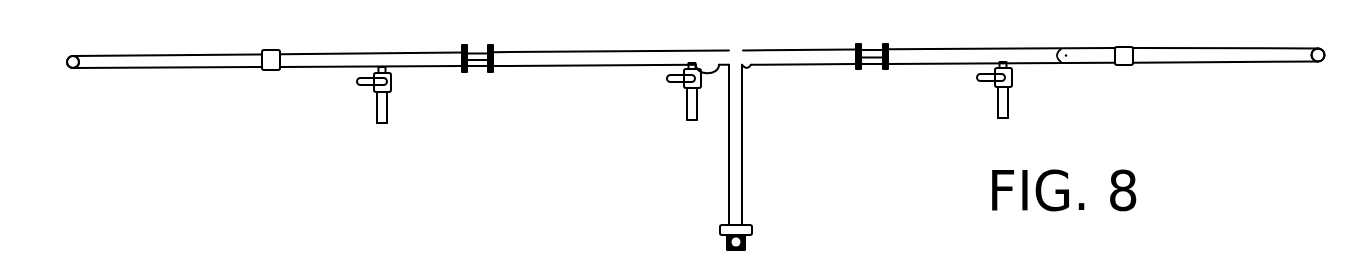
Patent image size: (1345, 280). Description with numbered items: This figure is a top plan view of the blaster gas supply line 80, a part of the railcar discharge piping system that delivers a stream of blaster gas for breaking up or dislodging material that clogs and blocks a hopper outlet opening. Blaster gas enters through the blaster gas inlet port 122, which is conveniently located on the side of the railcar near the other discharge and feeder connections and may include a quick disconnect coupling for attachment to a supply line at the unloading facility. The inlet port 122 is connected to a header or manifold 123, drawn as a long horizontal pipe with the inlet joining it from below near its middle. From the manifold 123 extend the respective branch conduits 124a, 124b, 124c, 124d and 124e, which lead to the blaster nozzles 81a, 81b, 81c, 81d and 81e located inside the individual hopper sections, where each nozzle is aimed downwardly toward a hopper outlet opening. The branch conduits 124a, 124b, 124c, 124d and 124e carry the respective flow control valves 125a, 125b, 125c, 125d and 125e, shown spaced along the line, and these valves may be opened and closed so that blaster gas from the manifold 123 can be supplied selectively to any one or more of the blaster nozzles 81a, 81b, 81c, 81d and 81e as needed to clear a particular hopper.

The blaster gas supply line 80 is at (702, 126).
The blaster nozzle 81a is at (68, 67).
The blaster nozzle 81b is at (381, 123).
The blaster nozzle 81c is at (693, 121).
The blaster nozzle 81d is at (1003, 119).
The blaster nozzle 81e is at (1324, 58).
The blaster gas inlet port 122 is at (752, 232).
The manifold 123 is at (807, 48).
The branch conduit 124a is at (165, 68).
The branch conduit 124b is at (376, 68).
The branch conduit 124c is at (720, 64).
The branch conduit 124d is at (990, 66).
The branch conduit 124e is at (1162, 63).
The flow control valve 125a is at (269, 50).
The flow control valve 125b is at (391, 80).
The flow control valve 125c is at (683, 84).
The flow control valve 125d is at (1012, 78).
The flow control valve 125e is at (1123, 46).